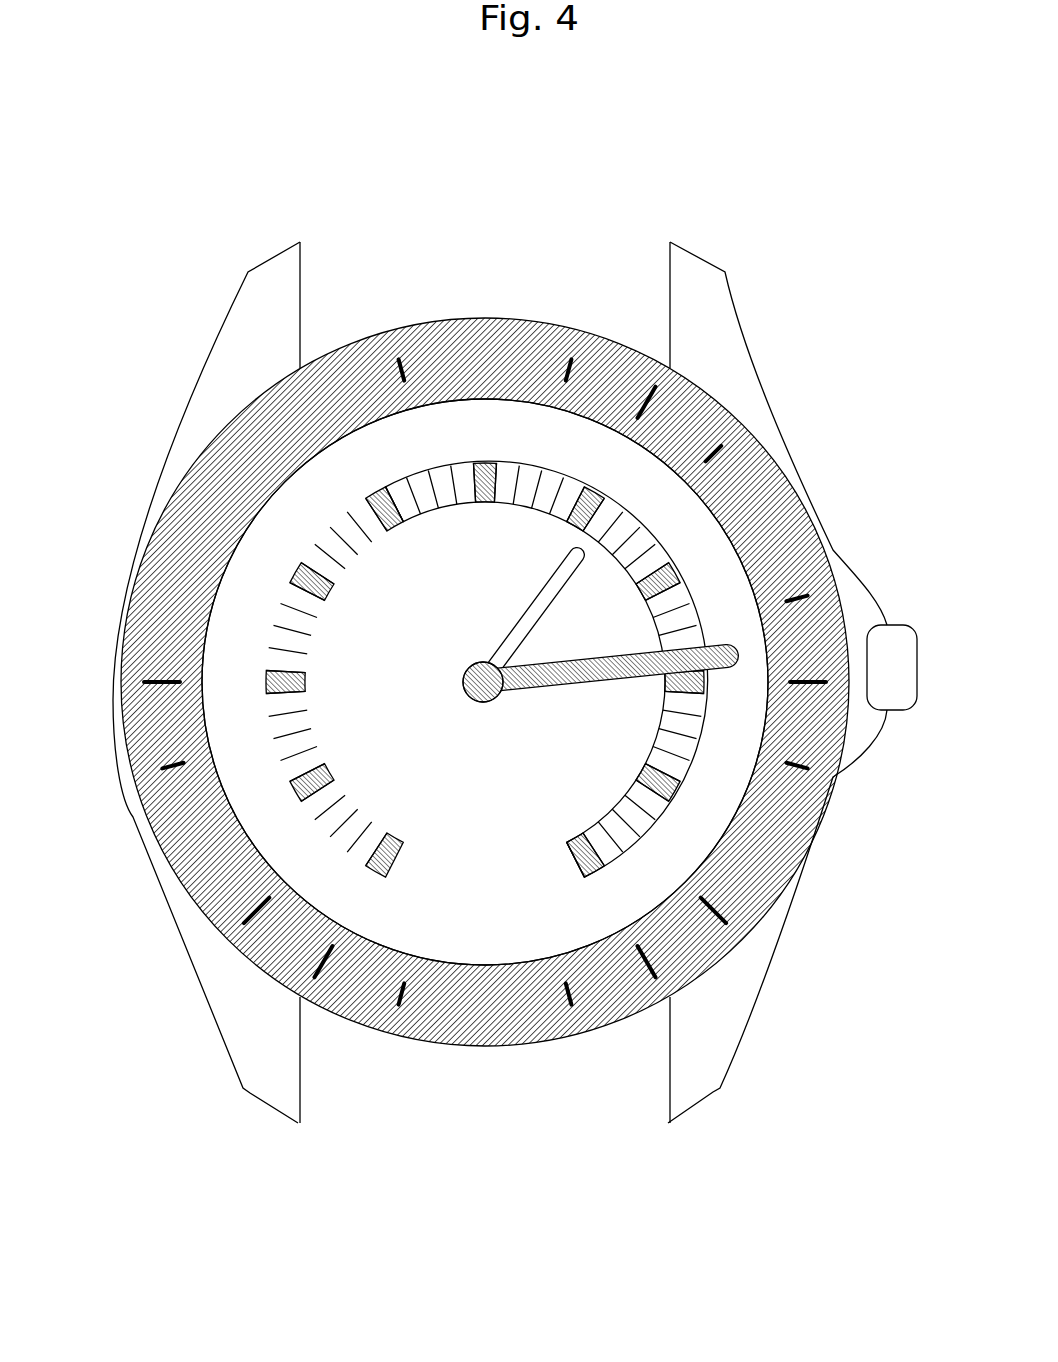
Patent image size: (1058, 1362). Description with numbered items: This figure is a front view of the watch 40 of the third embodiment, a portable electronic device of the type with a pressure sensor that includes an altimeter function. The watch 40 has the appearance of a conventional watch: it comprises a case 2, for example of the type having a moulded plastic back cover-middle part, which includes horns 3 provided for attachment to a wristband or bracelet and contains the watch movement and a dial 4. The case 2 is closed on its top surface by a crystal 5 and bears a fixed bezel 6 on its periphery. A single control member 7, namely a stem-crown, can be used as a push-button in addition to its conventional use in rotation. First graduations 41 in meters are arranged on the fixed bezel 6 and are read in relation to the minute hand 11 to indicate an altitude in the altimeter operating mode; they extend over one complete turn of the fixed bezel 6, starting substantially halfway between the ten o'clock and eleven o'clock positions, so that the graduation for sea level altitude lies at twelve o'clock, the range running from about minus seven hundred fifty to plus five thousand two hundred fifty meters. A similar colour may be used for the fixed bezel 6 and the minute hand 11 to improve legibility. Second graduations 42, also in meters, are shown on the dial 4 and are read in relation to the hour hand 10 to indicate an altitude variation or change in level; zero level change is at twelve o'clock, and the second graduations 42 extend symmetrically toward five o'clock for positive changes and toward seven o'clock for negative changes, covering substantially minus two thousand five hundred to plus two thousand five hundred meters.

The case 2 is at (843, 573).
The horns 3 is at (285, 285).
The dial 4 is at (657, 480).
The crystal 5 is at (236, 656).
The fixed bezel 6 is at (826, 781).
The control member 7 is at (897, 643).
The hour hand 10 is at (548, 603).
The minute hand 11 is at (533, 680).
The watch 40 is at (535, 731).
The first graduations 41 is at (440, 1000).
The second graduations 42 is at (589, 901).